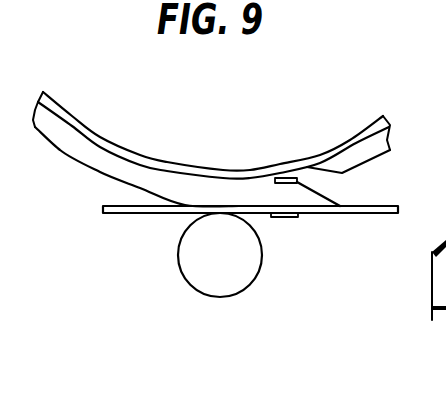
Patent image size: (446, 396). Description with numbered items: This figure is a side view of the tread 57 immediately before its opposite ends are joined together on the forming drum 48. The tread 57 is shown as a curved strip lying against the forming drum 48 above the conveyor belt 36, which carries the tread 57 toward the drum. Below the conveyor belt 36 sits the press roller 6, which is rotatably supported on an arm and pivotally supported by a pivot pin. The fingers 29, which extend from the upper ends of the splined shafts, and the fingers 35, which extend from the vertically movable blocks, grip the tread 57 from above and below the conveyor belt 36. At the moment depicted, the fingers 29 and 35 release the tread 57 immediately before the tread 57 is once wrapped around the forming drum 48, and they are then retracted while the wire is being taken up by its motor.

The forming drum 48 is at (115, 128).
The tread 57 is at (75, 145).
The fingers 29 is at (286, 176).
The conveyor belt 36 is at (381, 204).
The fingers 35 is at (286, 217).
The press roller 6 is at (193, 257).